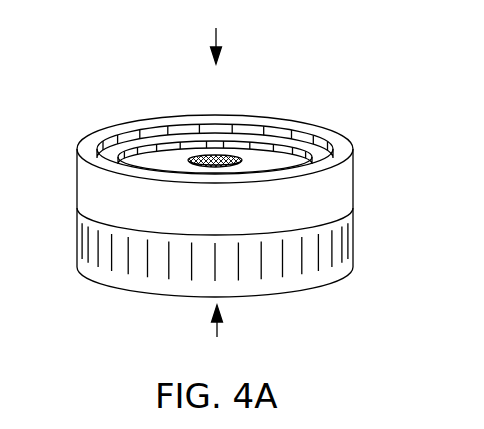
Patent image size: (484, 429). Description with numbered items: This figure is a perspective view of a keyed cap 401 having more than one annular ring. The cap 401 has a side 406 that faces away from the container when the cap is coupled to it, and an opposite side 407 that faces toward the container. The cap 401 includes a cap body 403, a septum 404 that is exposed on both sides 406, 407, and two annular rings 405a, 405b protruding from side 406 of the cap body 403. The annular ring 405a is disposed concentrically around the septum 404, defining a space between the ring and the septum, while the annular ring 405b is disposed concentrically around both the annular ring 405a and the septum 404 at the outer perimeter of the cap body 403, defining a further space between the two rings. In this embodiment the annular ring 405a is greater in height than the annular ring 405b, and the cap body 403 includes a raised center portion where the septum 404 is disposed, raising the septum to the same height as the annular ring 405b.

The cap 401 is at (98, 80).
The cap body 403 is at (353, 240).
The septum 404 is at (225, 155).
The annular ring 405a is at (323, 132).
The annular ring 405b is at (262, 140).
The side 406 is at (216, 34).
The side 407 is at (216, 333).